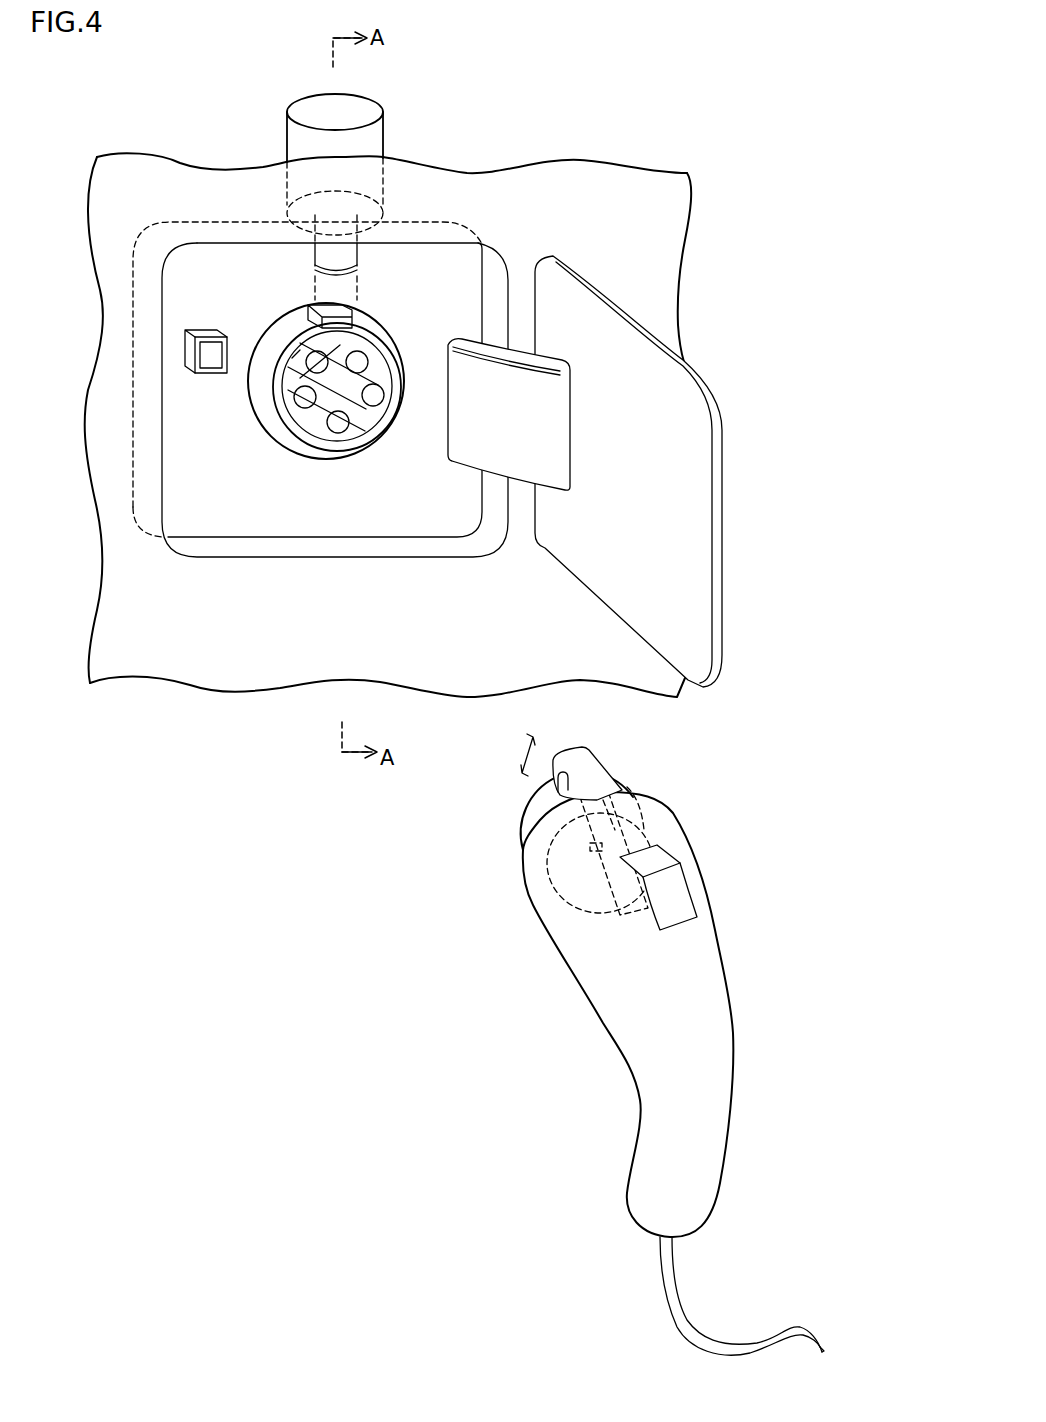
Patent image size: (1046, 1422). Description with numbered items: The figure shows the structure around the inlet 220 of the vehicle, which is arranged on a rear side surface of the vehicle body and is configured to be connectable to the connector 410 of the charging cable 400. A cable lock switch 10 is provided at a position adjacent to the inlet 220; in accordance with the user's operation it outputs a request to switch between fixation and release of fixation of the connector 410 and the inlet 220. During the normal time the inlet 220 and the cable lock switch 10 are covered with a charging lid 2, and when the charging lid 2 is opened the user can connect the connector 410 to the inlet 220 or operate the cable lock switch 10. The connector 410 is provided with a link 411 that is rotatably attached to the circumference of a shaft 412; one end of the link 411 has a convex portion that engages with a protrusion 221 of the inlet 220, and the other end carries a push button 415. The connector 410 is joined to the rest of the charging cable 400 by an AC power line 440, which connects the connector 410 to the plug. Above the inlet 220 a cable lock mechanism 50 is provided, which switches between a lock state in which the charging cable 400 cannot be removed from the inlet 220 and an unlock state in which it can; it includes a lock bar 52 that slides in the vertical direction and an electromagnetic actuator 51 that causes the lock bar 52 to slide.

The charging lid 2 is at (716, 548).
The cable lock switch 10 is at (208, 333).
The cable lock mechanism 50 is at (396, 174).
The electromagnetic actuator 51 is at (373, 138).
The lock bar 52 is at (337, 277).
The inlet 220 is at (288, 342).
The protrusion 221 is at (337, 306).
The charging cable 400 is at (640, 1044).
The connector 410 is at (730, 983).
The link 411 is at (555, 792).
The shaft 412 is at (657, 799).
The push button 415 is at (667, 858).
The AC power line 440 is at (668, 1297).